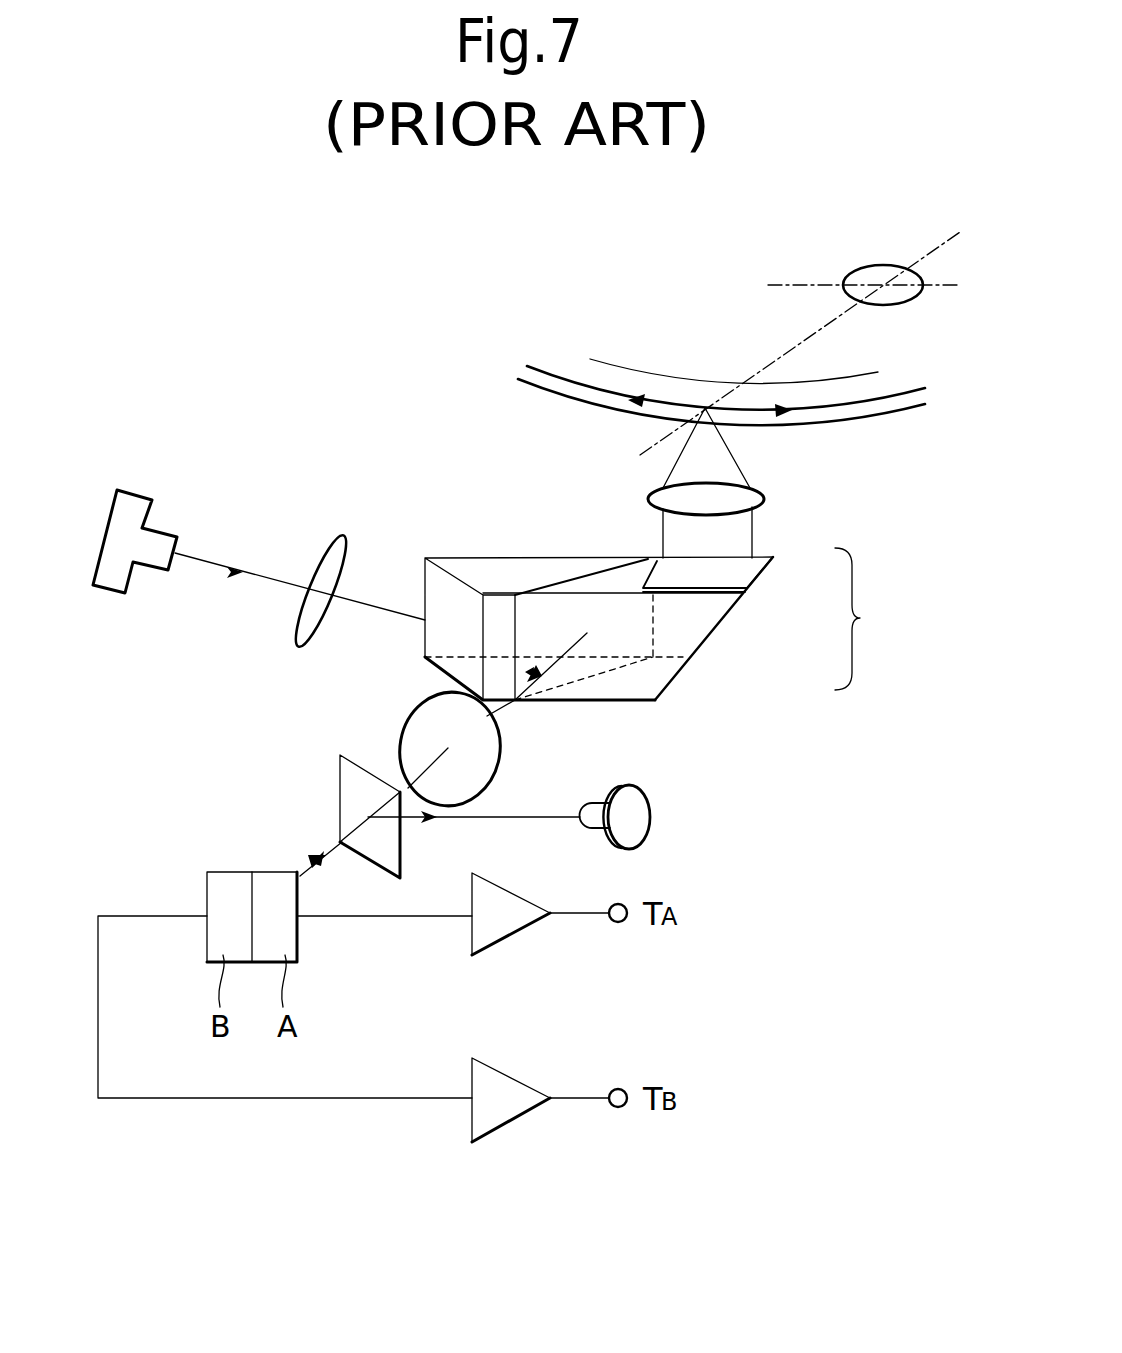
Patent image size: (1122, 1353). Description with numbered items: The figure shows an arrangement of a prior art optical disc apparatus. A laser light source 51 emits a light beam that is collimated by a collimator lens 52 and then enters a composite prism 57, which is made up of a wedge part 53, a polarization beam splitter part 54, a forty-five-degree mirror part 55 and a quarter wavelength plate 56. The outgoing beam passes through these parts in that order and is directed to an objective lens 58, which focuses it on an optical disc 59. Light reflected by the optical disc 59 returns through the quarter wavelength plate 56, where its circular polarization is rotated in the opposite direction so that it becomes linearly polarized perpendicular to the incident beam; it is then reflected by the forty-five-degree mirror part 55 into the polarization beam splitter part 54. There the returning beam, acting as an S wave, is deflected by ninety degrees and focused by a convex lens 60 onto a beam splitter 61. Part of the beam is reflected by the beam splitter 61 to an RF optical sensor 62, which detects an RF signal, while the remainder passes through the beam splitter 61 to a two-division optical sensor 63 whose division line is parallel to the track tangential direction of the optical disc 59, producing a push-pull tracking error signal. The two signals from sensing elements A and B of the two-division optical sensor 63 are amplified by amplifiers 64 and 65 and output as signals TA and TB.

The laser light source 51 is at (130, 490).
The collimator lens 52 is at (342, 533).
The wedge part 53 is at (490, 558).
The polarization beam splitter part 54 is at (608, 577).
The 45-degree mirror part 55 is at (710, 632).
The 1/4 wavelength plate 56 is at (745, 585).
The composite prism 57 is at (869, 619).
The objective lens 58 is at (763, 497).
The optical disc 59 is at (905, 403).
The convex lens 60 is at (413, 702).
The beam splitter 61 is at (340, 788).
The RF optical sensor 62 is at (640, 812).
The two-division optical sensor 63 is at (235, 852).
The amplifier 64 is at (513, 935).
The amplifier 65 is at (514, 1122).